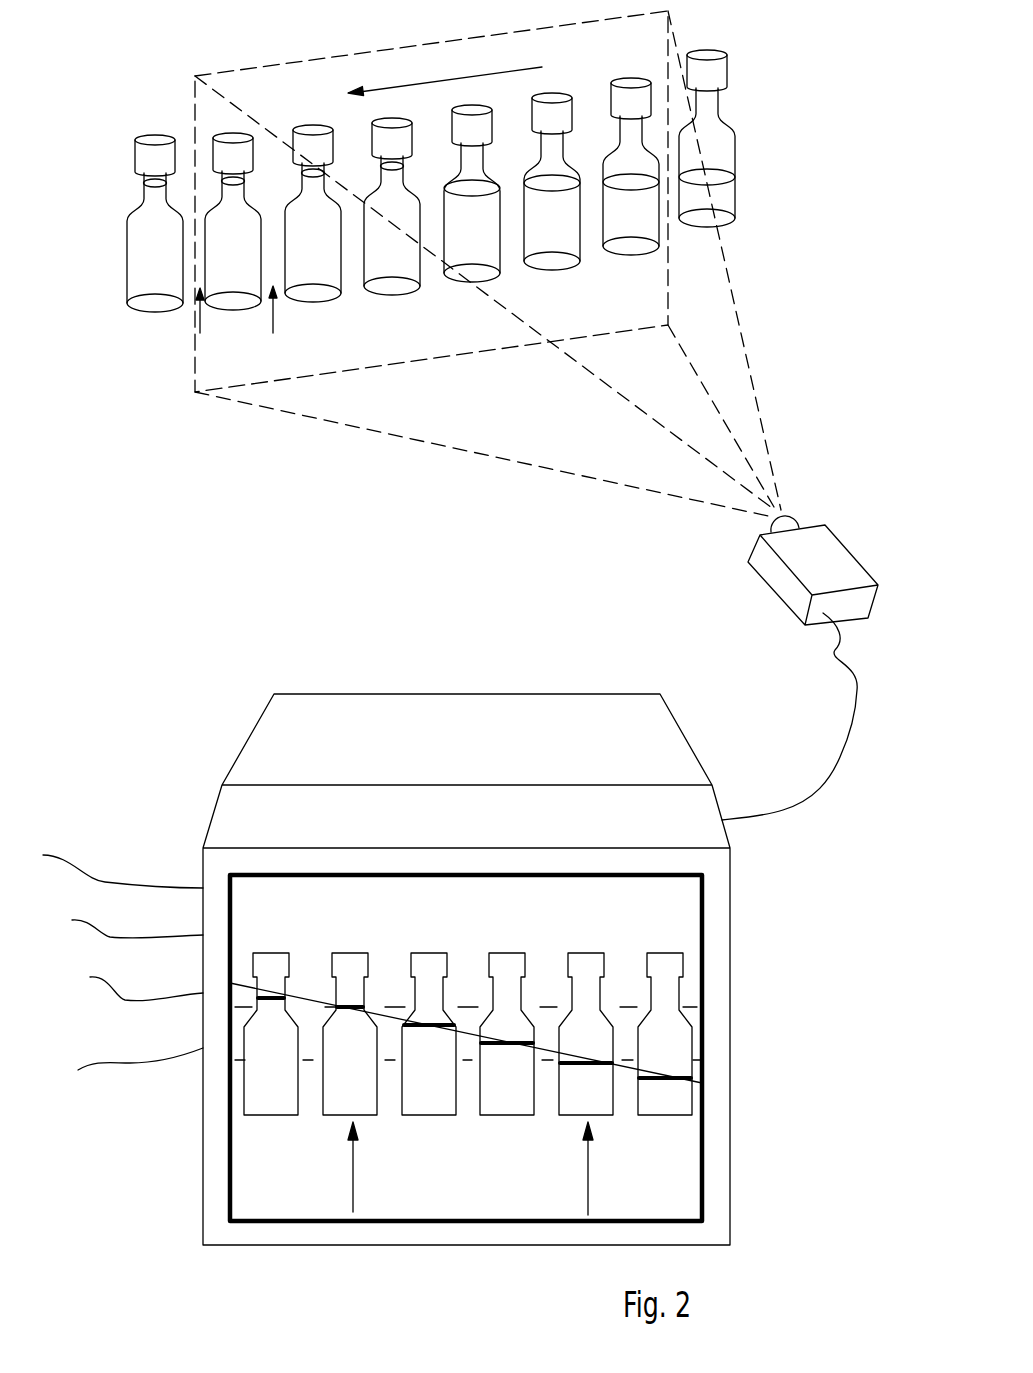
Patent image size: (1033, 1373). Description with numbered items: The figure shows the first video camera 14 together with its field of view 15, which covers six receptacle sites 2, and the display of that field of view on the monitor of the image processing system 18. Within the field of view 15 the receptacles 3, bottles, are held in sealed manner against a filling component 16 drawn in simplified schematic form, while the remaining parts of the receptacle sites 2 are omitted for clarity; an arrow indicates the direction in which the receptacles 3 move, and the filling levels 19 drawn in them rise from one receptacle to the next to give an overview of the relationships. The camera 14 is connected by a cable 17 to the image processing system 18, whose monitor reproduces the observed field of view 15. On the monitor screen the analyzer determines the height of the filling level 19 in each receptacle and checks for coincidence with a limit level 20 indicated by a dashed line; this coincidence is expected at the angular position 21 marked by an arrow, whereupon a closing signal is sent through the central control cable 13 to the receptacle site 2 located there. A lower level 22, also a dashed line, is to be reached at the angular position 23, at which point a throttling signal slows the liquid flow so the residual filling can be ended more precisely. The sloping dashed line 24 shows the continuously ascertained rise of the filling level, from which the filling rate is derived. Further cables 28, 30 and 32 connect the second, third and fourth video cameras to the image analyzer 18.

The receptacle site 2 is at (251, 322).
The receptacle 3 is at (232, 267).
The central control cable 13 is at (100, 882).
The first video camera 14 is at (827, 540).
The field of view 15 is at (330, 77).
The filling component 16 is at (228, 155).
The cable 17 is at (853, 717).
The image processing system 18 is at (330, 713).
The filling level 19 is at (275, 1000).
The limit level 20 is at (238, 1005).
The angular position 21 is at (353, 1192).
The lower level 22 is at (310, 1060).
The angular position 23 is at (588, 1195).
The sloping dashed line 24 is at (322, 998).
The cable 28 is at (108, 936).
The cable 30 is at (125, 1000).
The cable 32 is at (125, 1060).